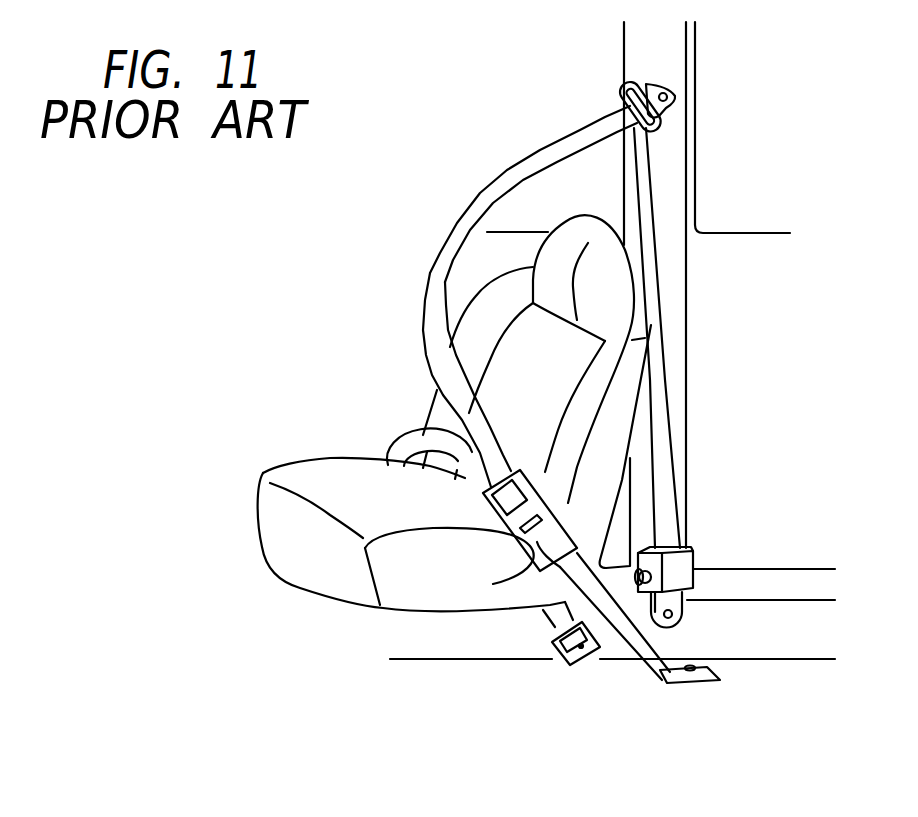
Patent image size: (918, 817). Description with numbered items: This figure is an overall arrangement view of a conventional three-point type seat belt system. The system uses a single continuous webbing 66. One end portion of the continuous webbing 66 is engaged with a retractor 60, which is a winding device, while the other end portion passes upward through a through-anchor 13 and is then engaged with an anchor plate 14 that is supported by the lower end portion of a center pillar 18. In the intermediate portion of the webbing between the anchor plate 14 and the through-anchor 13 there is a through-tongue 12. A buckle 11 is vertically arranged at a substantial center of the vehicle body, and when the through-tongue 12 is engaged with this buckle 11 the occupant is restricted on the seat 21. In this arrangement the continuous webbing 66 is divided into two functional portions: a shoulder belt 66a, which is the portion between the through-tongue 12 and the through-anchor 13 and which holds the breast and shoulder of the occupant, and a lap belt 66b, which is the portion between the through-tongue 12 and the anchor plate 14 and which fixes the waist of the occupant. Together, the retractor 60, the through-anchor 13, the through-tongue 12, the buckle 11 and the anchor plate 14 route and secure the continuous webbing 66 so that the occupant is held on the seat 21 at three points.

The continuous webbing 66 is at (507, 167).
The shoulder belt 66a is at (433, 272).
The lap belt 66b is at (412, 440).
The through-anchor 13 is at (660, 128).
The center pillar 18 is at (668, 196).
The seat 21 is at (325, 493).
The through-tongue 12 is at (480, 495).
The buckle 11 is at (517, 567).
The retractor 60 is at (672, 578).
The anchor plate 14 is at (580, 648).